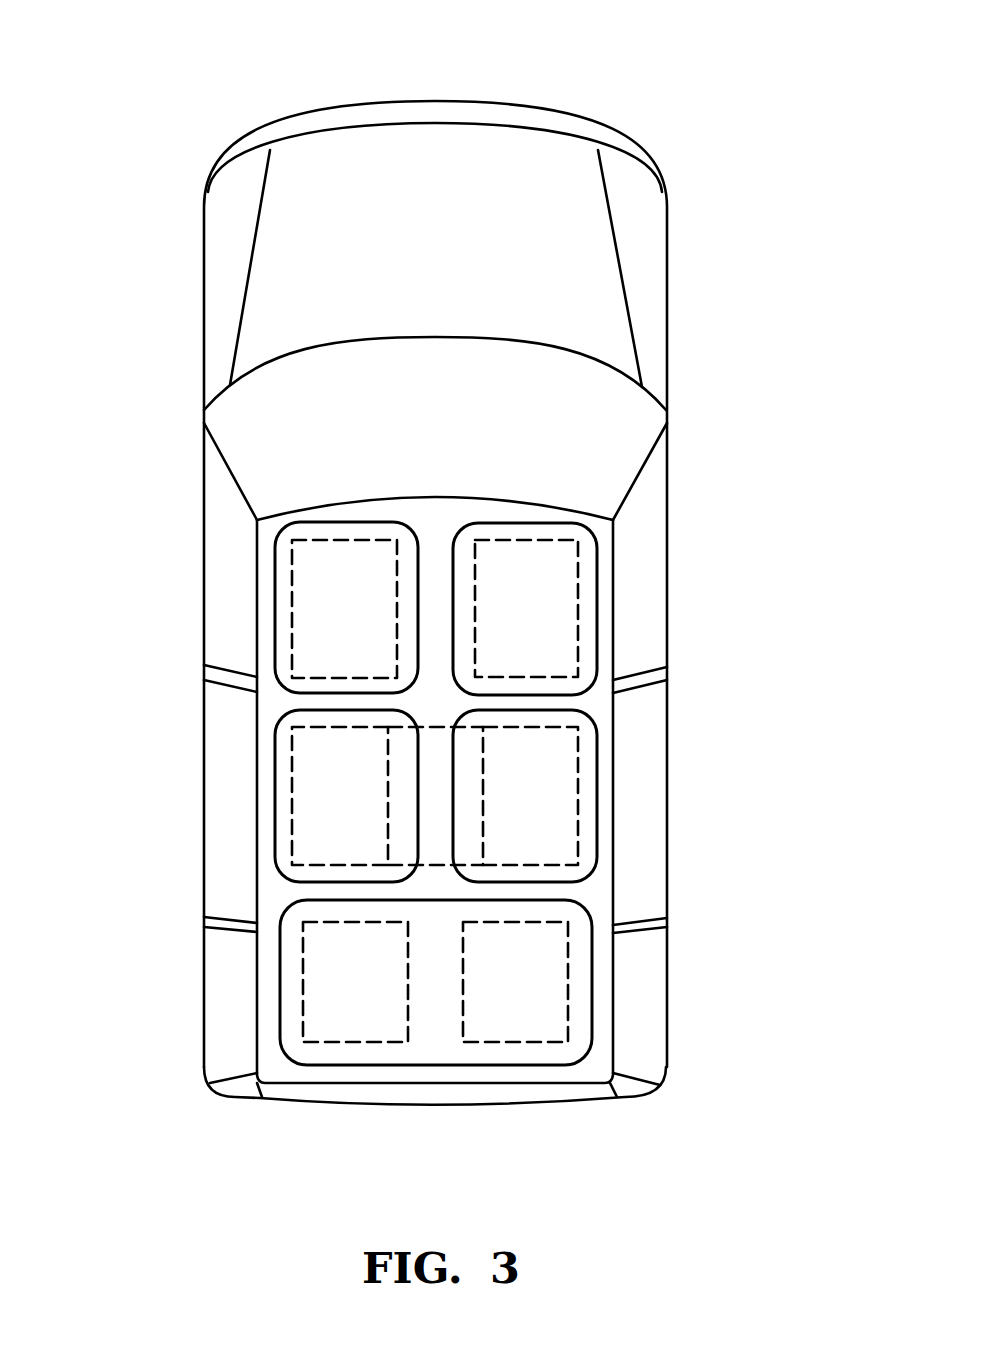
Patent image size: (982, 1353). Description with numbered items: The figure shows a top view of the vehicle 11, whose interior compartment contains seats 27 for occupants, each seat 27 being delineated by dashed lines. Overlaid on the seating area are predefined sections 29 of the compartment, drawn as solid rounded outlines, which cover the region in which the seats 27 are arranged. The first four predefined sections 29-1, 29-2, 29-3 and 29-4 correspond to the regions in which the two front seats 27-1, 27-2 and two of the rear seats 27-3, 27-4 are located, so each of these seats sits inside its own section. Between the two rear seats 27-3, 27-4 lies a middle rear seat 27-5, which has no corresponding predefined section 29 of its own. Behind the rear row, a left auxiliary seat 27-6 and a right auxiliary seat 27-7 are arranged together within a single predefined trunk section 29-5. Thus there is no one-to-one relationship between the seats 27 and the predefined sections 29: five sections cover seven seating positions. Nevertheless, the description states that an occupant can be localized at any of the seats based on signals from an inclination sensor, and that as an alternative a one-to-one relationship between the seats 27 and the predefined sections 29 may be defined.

The vehicle 11 is at (553, 167).
The seats 27 is at (634, 561).
The front seat 27-1 is at (313, 628).
The front seat 27-2 is at (558, 588).
The rear seat 27-3 is at (303, 800).
The rear seat 27-4 is at (567, 800).
The middle rear seat 27-5 is at (407, 837).
The left auxiliary seat 27-6 is at (327, 987).
The right auxiliary seat 27-7 is at (545, 987).
The predefined sections 29 is at (621, 545).
The predefined section 29-1 is at (280, 560).
The predefined section 29-2 is at (588, 637).
The predefined section 29-3 is at (282, 740).
The predefined section 29-4 is at (590, 740).
The predefined trunk section 29-5 is at (440, 1043).